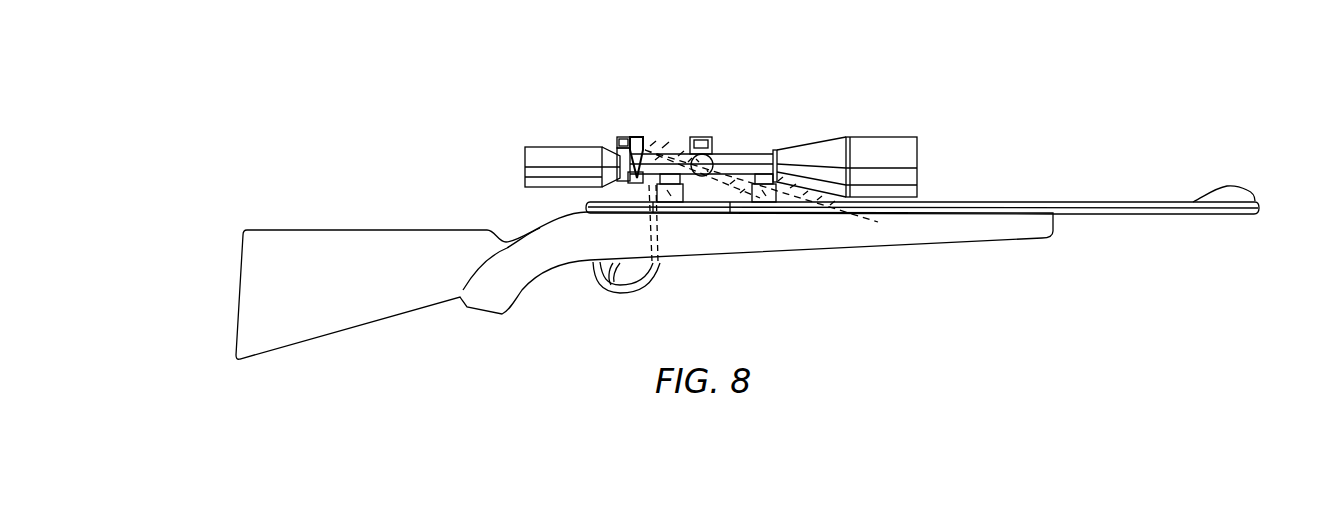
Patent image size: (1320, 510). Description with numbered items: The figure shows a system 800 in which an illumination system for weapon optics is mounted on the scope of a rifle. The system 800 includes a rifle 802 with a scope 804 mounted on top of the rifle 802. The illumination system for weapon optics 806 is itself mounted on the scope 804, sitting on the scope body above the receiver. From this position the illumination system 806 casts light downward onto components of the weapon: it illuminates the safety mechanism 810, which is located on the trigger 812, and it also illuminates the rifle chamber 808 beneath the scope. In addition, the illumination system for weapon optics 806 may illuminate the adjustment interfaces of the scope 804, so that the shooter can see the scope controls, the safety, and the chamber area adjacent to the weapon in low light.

The system 800 is at (442, 121).
The rifle 802 is at (308, 230).
The scope 804 is at (880, 136).
The illumination system for weapon optics 806 is at (638, 137).
The rifle chamber 808 is at (727, 214).
The safety mechanism 810 is at (662, 265).
The trigger 812 is at (623, 296).